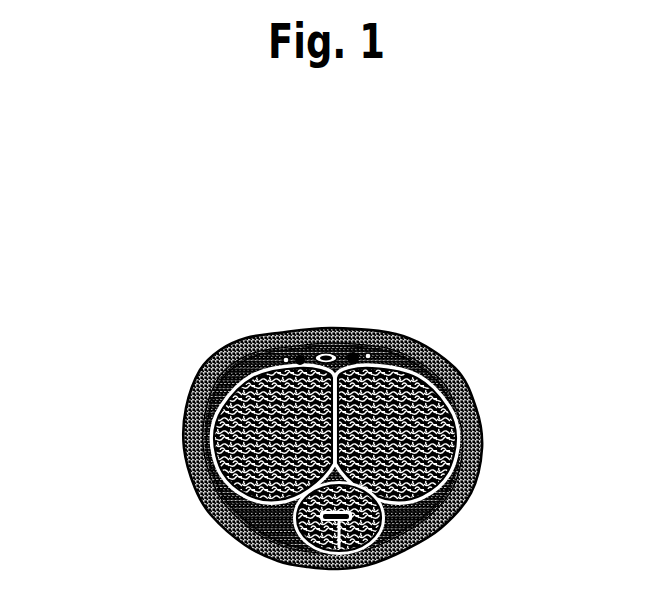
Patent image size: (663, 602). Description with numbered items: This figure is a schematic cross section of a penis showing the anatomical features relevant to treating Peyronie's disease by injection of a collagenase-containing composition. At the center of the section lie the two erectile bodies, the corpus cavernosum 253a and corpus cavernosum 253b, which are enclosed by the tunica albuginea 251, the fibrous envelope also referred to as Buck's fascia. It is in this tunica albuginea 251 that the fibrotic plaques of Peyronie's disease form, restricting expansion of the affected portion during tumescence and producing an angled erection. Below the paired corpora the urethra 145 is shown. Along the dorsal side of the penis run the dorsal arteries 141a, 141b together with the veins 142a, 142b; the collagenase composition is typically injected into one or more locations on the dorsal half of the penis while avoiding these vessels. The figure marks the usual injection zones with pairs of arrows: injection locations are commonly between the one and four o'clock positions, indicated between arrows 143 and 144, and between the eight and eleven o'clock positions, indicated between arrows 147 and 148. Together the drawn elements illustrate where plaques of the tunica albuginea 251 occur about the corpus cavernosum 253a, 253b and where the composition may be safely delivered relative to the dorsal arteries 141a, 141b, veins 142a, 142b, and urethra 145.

The dorsal artery 141a is at (344, 344).
The dorsal artery 141b is at (360, 345).
The vein 142a is at (309, 341).
The vein 142b is at (314, 345).
The arrow 143 is at (384, 297).
The arrow 144 is at (473, 505).
The urethra 145 is at (376, 513).
The arrow 147 is at (182, 509).
The arrow 148 is at (252, 308).
The tunica albuginea 251 is at (437, 372).
The corpus cavernosum 253a is at (290, 405).
The corpus cavernosum 253b is at (395, 433).